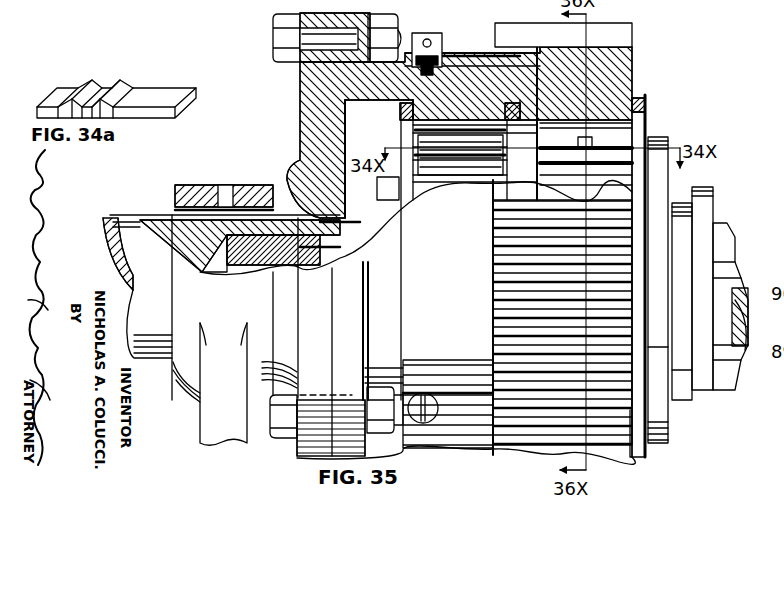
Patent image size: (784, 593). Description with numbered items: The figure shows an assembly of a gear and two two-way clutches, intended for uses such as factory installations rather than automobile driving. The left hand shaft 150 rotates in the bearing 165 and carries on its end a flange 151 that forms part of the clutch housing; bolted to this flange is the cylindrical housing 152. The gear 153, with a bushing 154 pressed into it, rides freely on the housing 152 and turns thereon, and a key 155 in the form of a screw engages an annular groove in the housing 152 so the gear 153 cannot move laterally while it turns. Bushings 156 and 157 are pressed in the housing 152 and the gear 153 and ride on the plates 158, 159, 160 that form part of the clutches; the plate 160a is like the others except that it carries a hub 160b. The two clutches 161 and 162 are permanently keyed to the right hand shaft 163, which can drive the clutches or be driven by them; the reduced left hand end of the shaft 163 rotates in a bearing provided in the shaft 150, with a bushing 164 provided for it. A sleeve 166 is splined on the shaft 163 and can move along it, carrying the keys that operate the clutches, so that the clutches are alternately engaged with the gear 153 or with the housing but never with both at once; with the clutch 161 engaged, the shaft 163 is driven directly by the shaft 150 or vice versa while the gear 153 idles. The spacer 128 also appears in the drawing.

The spacer sleeve 128 is at (663, 400).
The shaft 150 is at (149, 291).
The flange 151 is at (312, 85).
The cylindrical housing 152 is at (393, 78).
The gear 153 is at (617, 30).
The bushing 154 is at (487, 48).
The key 155 is at (435, 33).
The bushing 156 is at (523, 102).
The bushing 157 is at (646, 102).
The plate 158 is at (639, 128).
The plate 159 is at (520, 218).
The plate 160 is at (476, 186).
The plate 160a is at (402, 116).
The hub 160b is at (374, 218).
The clutch 161 is at (442, 172).
The clutch 162 is at (617, 173).
The shaft 163 is at (297, 264).
The bushing 164 is at (330, 260).
The bearing 165 is at (187, 186).
The sleeve 166 is at (715, 380).